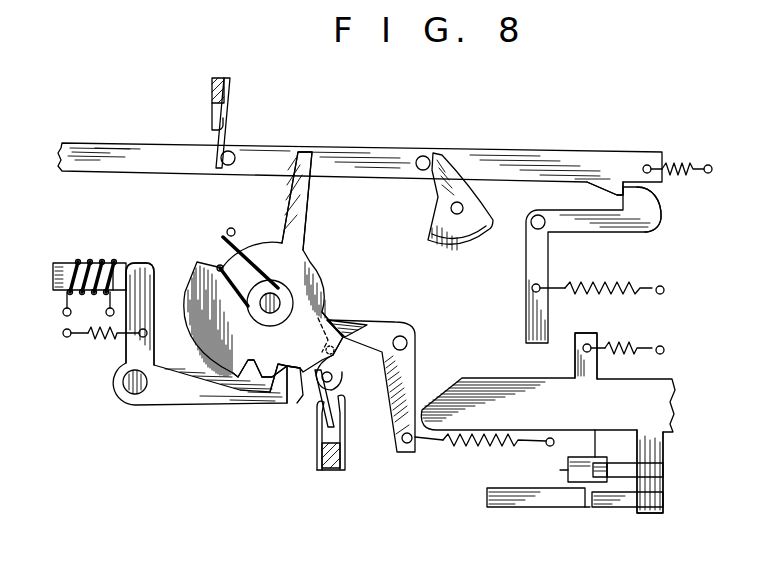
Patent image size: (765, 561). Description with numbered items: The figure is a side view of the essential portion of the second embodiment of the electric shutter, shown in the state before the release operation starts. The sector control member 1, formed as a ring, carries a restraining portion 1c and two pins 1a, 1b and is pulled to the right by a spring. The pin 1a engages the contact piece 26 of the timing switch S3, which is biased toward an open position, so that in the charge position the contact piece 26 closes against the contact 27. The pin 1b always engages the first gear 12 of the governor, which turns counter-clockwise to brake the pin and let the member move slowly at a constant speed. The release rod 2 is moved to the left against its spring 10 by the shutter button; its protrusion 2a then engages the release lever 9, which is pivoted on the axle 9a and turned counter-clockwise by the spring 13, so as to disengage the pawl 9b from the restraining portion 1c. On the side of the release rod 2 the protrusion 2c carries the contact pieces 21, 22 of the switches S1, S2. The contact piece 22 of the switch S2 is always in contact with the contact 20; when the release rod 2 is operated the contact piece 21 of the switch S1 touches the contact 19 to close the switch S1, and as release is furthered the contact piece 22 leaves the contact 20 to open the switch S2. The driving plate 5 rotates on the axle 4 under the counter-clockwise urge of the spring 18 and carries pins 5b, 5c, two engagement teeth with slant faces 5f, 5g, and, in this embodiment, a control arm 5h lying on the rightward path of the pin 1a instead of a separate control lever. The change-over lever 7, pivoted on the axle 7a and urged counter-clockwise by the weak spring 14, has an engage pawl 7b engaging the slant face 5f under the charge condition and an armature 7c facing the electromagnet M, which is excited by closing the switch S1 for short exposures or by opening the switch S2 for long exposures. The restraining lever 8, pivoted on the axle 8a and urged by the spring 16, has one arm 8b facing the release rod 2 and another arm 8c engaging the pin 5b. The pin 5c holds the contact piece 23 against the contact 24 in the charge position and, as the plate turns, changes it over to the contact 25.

The sector control member 1 is at (342, 150).
The pin 1a is at (234, 156).
The pin 1b is at (425, 156).
The restraining portion 1c is at (623, 192).
The release rod 2 is at (485, 380).
The protrusion 2a is at (597, 333).
The protrusion 2c is at (660, 448).
The axle 4 is at (290, 290).
The driving plate 5 is at (187, 290).
The pin 5b is at (335, 320).
The pin 5c is at (333, 377).
The slant face 5f is at (255, 378).
The slant face 5g is at (215, 405).
The control arm 5h is at (305, 200).
The change-over lever 7 is at (163, 397).
The axle 7a is at (123, 383).
The engage pawl 7b is at (290, 405).
The armature 7c is at (140, 262).
The restraining lever 8 is at (412, 370).
The axle 8a is at (405, 335).
The arm 8b is at (406, 445).
The arm 8c is at (355, 328).
The release lever 9 is at (520, 262).
The axle 9a is at (539, 214).
The pawl 9b is at (658, 208).
The spring 10 is at (660, 358).
The first gear 12 is at (440, 220).
The spring 13 is at (640, 280).
The weak spring 14 is at (82, 344).
The spring 16 is at (460, 442).
The spring 18 is at (232, 228).
The contact 19 is at (527, 506).
The contact 20 is at (585, 458).
The contact piece 21 is at (620, 506).
The contact piece 22 is at (628, 464).
The contact piece 23 is at (345, 400).
The contact 24 is at (312, 437).
The contact 25 is at (338, 458).
The contact piece 26 is at (222, 132).
The contact 27 is at (212, 112).
The electromagnet M is at (83, 262).
The switch S1 is at (588, 510).
The switch S2 is at (566, 470).
The timing switch S3 is at (226, 86).